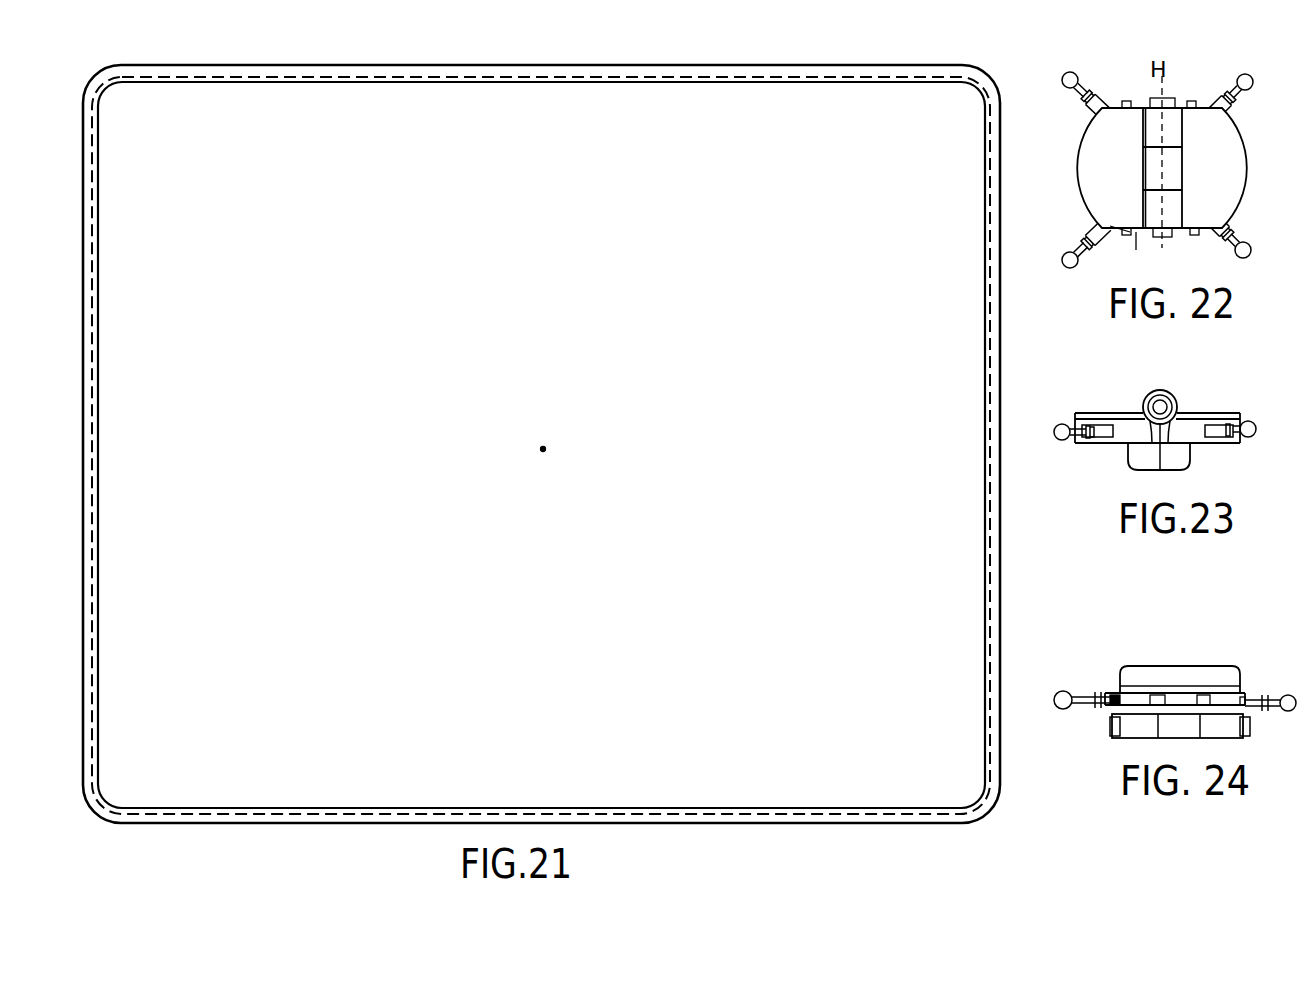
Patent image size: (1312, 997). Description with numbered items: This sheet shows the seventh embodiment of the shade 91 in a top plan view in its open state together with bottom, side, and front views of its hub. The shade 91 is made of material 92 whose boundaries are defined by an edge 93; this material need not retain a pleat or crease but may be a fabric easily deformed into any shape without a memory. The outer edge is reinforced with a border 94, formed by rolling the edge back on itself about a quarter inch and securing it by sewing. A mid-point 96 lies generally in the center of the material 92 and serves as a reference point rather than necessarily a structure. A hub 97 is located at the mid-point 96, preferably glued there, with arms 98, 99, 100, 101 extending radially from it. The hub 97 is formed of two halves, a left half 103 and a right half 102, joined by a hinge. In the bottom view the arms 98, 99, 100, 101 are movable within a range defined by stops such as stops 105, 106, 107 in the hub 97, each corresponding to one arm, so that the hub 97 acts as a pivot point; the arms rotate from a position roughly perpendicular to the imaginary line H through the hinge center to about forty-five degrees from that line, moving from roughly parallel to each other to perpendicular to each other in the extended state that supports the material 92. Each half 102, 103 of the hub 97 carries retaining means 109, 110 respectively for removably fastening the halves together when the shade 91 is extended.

In FIG. 21, the shade 91 is at (288, 842).
In FIG. 21, the material 92 is at (595, 614).
In FIG. 21, the edge 93 is at (989, 812).
In FIG. 21, the border 94 is at (989, 596).
In FIG. 21, the mid-point 96 is at (546, 448).
In FIG. 22, the hub 97 is at (1072, 182).
In FIG. 24, the hub 97 is at (1197, 646).
In FIG. 22, the arm 98 is at (1062, 86).
In FIG. 23, the arm 98 is at (1058, 428).
In FIG. 24, the arm 98 is at (1055, 697).
In FIG. 22, the arm 99 is at (1062, 270).
In FIG. 22, the arm 100 is at (1244, 91).
In FIG. 24, the arm 100 is at (1289, 696).
In FIG. 22, the arm 101 is at (1226, 238).
In FIG. 22, the right half 102 is at (1203, 230).
In FIG. 22, the left half 103 is at (1131, 253).
In FIG. 22, the stop 105 is at (1127, 100).
In FIG. 24, the stop 105 is at (1120, 712).
In FIG. 22, the stop 106 is at (1128, 233).
In FIG. 22, the stop 107 is at (1199, 92).
In FIG. 24, the stop 107 is at (1236, 712).
In FIG. 23, the retaining means 109 is at (1128, 458).
In FIG. 23, the retaining means 110 is at (1190, 455).